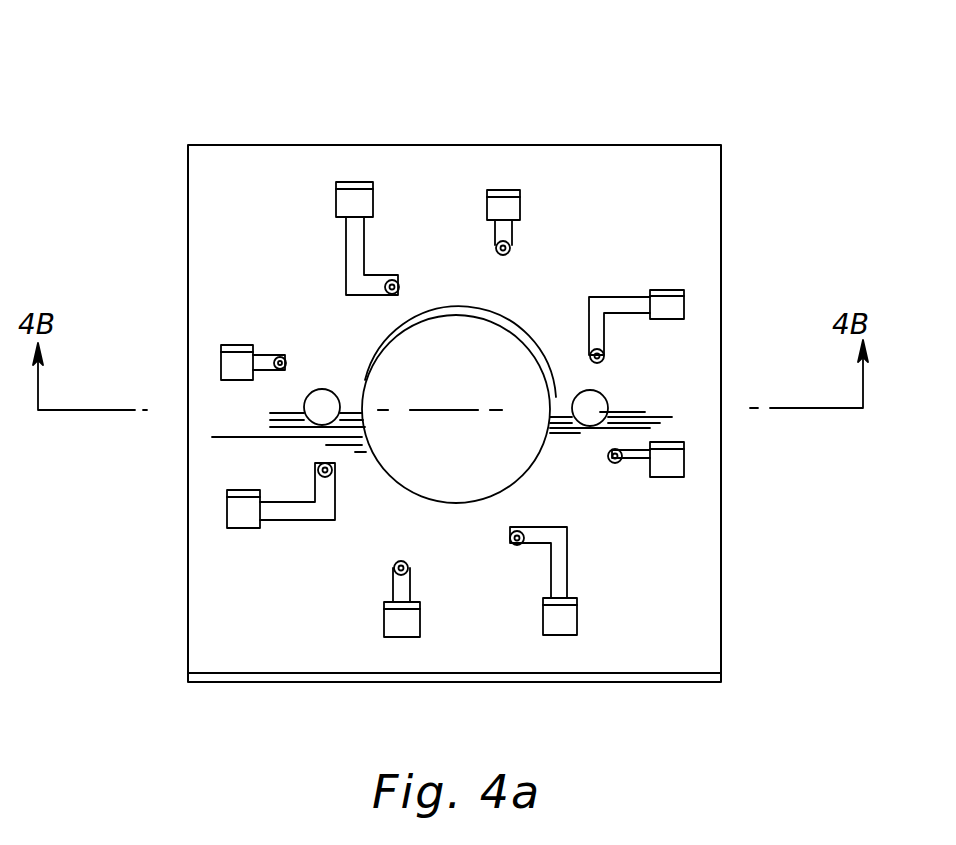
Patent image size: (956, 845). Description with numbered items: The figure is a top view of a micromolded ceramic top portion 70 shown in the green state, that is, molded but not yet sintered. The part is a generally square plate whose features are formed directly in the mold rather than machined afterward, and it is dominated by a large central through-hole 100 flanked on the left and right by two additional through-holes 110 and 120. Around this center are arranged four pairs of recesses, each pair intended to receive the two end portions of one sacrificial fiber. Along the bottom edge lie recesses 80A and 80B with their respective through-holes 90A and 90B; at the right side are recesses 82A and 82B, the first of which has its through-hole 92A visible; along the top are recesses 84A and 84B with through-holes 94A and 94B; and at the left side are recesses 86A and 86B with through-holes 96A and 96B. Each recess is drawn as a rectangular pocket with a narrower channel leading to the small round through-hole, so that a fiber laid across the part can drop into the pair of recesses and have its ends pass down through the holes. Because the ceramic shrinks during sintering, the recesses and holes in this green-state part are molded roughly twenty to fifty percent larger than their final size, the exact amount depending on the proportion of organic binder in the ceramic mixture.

The micromolded ceramic top portion 70 is at (568, 60).
The recess 80A is at (400, 622).
The recess 80B is at (558, 622).
The recess 82A is at (665, 460).
The recess 82B is at (663, 306).
The recess 84A is at (502, 198).
The recess 84B is at (351, 194).
The recess 86A is at (240, 362).
The recess 86B is at (242, 510).
The through-hole 90A is at (394, 568).
The through-hole 90B is at (512, 544).
The through-hole 92A is at (615, 462).
The through-hole 94A is at (506, 254).
The through-hole 94B is at (384, 292).
The through-hole 96A is at (278, 357).
The through-hole 96B is at (332, 470).
The central through-hole 100 is at (494, 356).
The through-hole 110 is at (318, 408).
The through-hole 120 is at (592, 407).